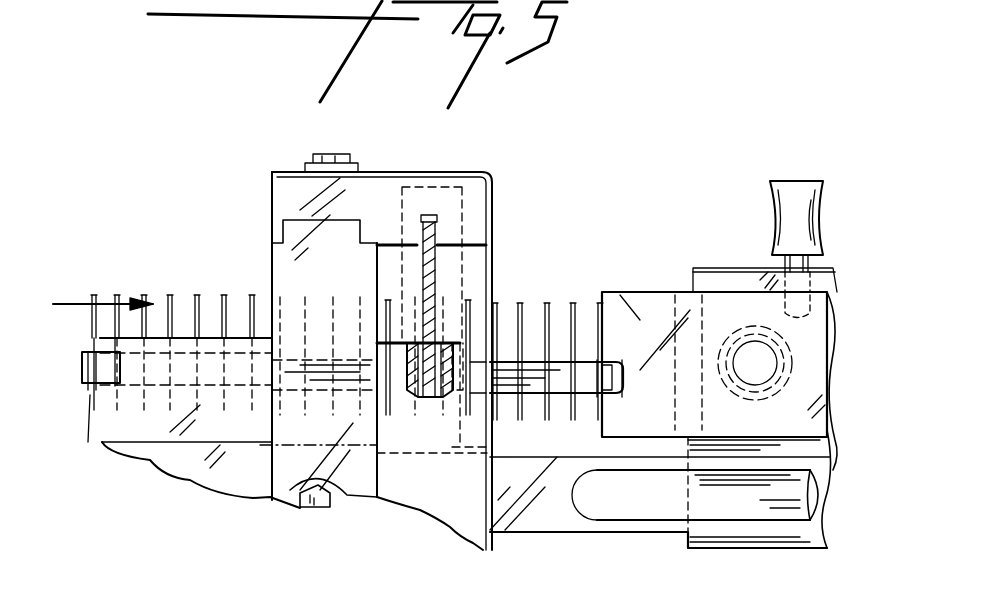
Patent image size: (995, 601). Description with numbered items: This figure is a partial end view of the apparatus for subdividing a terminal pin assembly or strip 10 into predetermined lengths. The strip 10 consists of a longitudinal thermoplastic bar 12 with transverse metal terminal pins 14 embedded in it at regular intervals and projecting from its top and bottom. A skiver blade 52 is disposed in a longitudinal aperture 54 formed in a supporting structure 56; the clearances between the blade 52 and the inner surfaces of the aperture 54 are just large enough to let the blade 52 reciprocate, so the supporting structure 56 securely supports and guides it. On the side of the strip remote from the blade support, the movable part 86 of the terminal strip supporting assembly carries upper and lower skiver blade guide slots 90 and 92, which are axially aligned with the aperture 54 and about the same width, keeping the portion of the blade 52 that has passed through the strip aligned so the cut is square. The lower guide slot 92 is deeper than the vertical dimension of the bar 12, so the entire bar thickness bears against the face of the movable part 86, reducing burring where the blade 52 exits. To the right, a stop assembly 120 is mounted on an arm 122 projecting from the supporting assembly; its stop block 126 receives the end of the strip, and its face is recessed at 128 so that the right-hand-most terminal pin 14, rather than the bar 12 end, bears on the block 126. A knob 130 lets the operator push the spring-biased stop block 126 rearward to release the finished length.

The terminal pin assembly 10 is at (76, 395).
The thermoplastic bar 12 is at (85, 367).
The terminal pins 14 is at (247, 318).
The skiver blade 52 is at (433, 288).
The longitudinal aperture 54 is at (420, 215).
The supporting structure 56 is at (463, 210).
The movable part 86 is at (240, 480).
The upper skiver blade guide slot 90 is at (437, 240).
The lower skiver blade guide slot 92 is at (430, 400).
The stop assembly 120 is at (670, 222).
The arm 122 is at (553, 520).
The stop block 126 is at (637, 310).
The recess 128 is at (600, 410).
The knob 130 is at (783, 182).